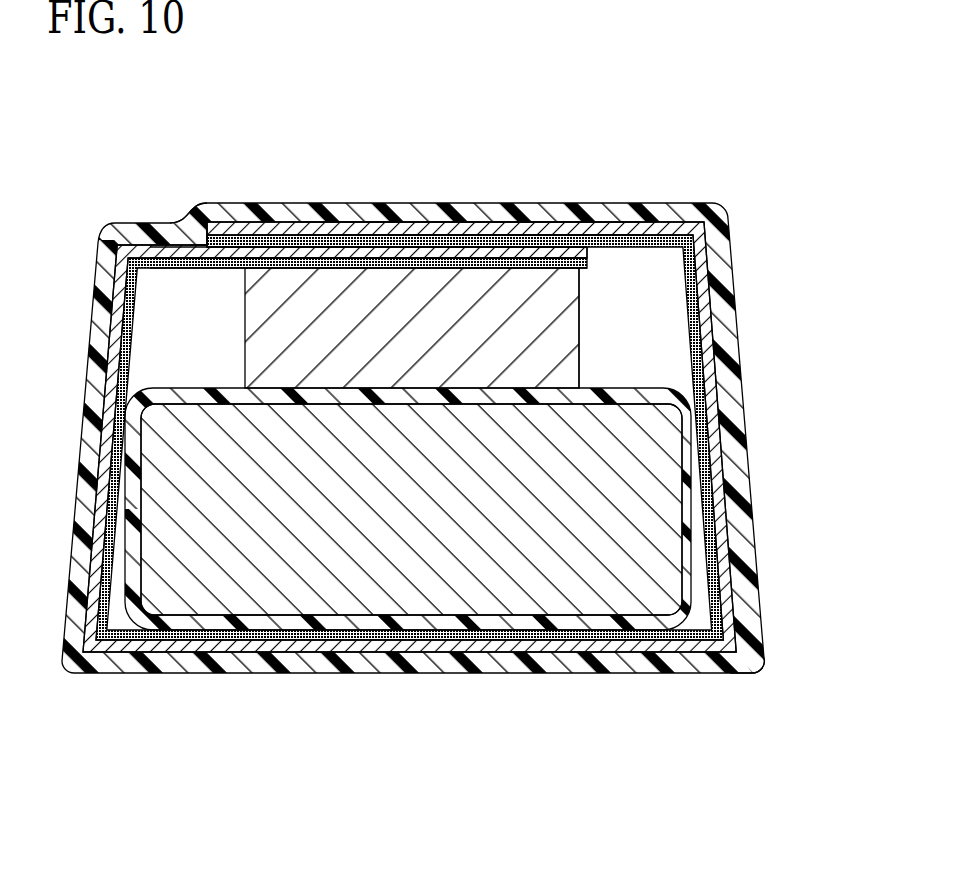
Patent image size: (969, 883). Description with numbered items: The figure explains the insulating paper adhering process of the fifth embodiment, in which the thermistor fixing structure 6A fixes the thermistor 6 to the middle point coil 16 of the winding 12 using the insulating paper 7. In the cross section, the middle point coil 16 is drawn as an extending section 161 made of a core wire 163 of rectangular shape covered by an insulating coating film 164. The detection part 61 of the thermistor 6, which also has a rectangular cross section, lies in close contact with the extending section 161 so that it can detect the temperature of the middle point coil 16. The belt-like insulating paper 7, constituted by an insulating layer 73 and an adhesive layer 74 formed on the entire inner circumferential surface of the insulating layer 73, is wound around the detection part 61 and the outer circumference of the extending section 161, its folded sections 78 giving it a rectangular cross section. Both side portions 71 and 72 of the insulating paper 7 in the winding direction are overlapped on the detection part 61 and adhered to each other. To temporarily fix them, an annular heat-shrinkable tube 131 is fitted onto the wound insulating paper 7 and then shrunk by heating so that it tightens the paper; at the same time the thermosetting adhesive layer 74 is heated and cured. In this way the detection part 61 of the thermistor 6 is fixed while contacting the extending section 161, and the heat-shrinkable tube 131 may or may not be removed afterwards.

The thermistor fixing structure 6A is at (419, 414).
The insulating paper 7 is at (604, 660).
The folded section 78 is at (746, 661).
The heat-shrinkable tube 131 is at (230, 213).
The winding 12 is at (409, 441).
The side portion 71 is at (428, 239).
The side portion 72 is at (484, 254).
The insulating layer 73 is at (545, 230).
The adhesive layer 74 is at (369, 245).
The thermistor 6 is at (456, 249).
The detection part 61 is at (565, 332).
The middle point coil 16 is at (408, 591).
The extending section 161 is at (408, 591).
The core wire 163 is at (468, 574).
The insulating coating film 164 is at (377, 623).